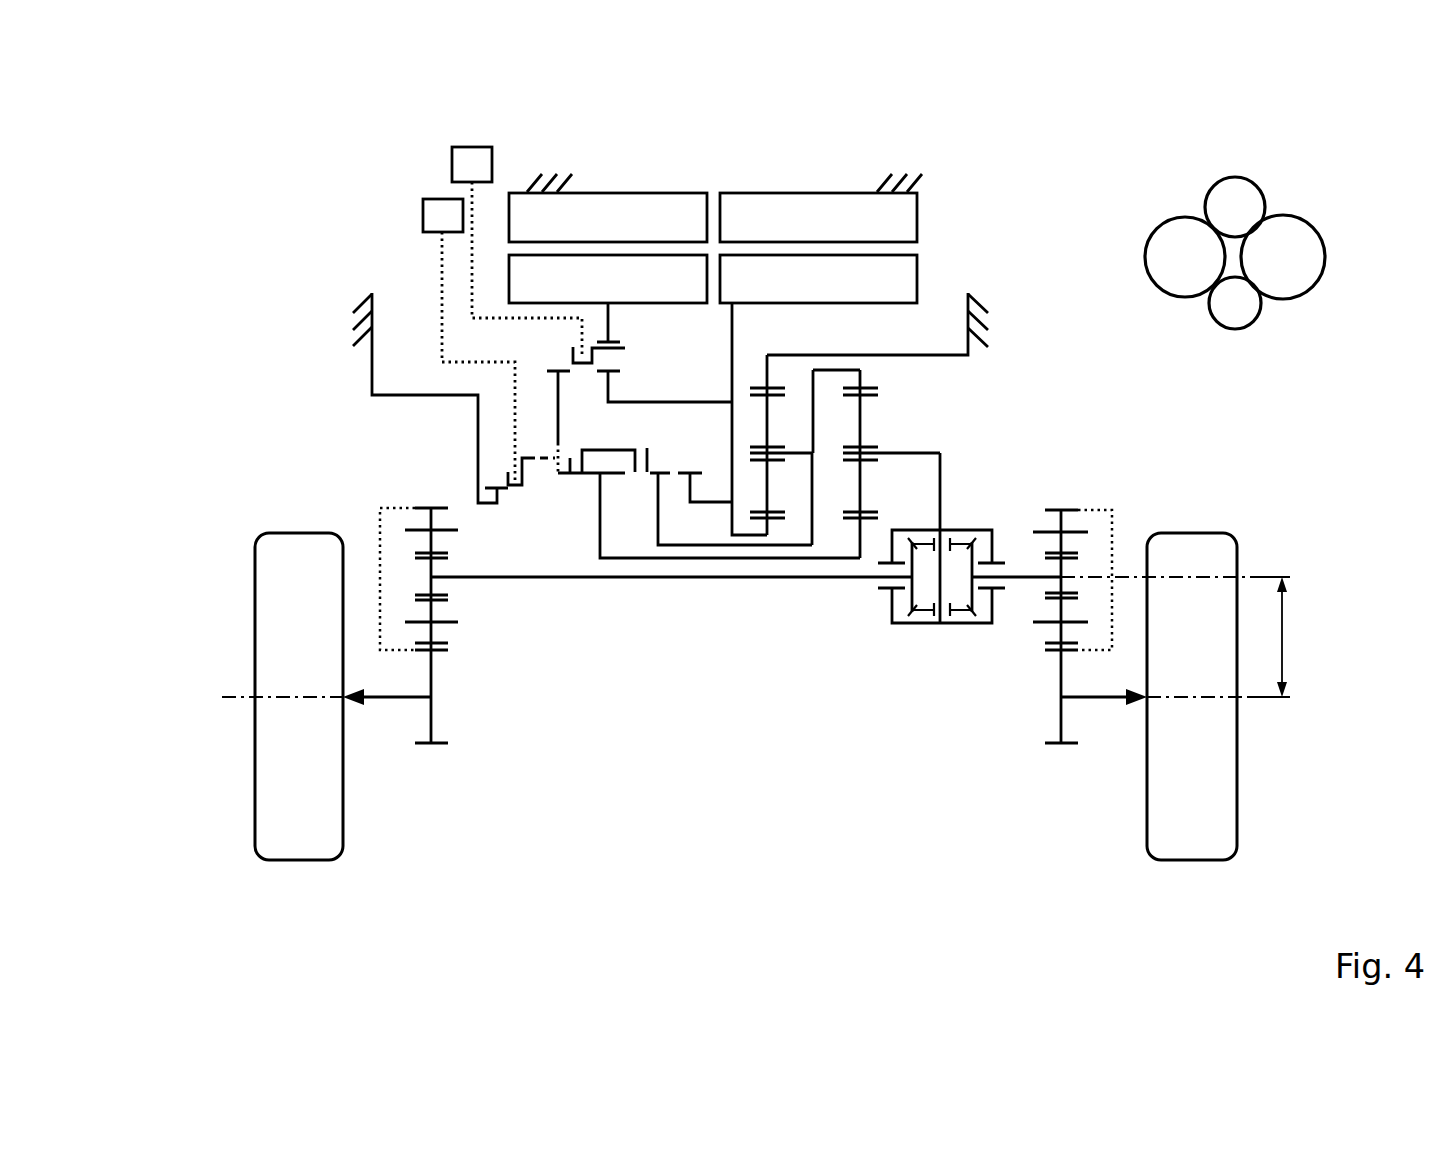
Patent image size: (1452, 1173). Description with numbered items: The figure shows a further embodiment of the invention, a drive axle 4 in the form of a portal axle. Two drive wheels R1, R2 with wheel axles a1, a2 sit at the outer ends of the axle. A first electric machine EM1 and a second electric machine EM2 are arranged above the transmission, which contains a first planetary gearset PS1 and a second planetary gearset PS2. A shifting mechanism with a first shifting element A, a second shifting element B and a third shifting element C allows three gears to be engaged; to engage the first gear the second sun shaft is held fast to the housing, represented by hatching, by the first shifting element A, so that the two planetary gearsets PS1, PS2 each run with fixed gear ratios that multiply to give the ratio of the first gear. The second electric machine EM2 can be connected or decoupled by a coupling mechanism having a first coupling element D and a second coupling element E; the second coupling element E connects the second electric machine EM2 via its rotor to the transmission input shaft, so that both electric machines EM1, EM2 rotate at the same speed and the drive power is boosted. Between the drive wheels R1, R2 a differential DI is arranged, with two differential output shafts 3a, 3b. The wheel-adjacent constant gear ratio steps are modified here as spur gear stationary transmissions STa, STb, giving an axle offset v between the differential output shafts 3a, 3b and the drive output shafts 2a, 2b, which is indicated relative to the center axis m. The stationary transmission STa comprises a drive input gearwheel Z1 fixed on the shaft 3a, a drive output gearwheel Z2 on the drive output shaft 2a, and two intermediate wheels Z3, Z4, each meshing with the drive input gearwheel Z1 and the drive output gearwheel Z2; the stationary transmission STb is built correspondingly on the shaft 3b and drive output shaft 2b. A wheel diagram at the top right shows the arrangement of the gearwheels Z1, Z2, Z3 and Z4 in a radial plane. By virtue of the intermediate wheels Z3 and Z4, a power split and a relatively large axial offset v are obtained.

The second electric machine EM2 is at (610, 176).
The first electric machine EM1 is at (824, 176).
The drive axle 4 is at (1016, 438).
The first shifting element A is at (507, 494).
The second shifting element B is at (709, 503).
The third shifting element C is at (705, 504).
The first coupling element D is at (562, 407).
The second coupling element E is at (664, 386).
The first planetary gearset PS1 is at (767, 598).
The second planetary gearset PS2 is at (860, 598).
The differential output shaft 3a is at (680, 580).
The differential output shaft 3b is at (1027, 577).
The differential DI is at (938, 633).
The spur gear stationary transmission STa is at (431, 798).
The spur gear stationary transmission STb is at (1061, 798).
The drive input gearwheel Z1 is at (1365, 363).
The drive output gearwheel Z2 is at (1232, 190).
The intermediate wheel Z3 is at (1365, 320).
The intermediate wheel Z4 is at (1182, 237).
The drive output shaft 2a is at (382, 700).
The drive output shaft 2b is at (1103, 700).
The wheel axle a1 is at (228, 697).
The wheel axle a2 is at (1262, 697).
The center axis m is at (1262, 577).
The axle offset v is at (1282, 637).
The drive wheel R1 is at (310, 825).
The drive wheel R2 is at (1195, 825).